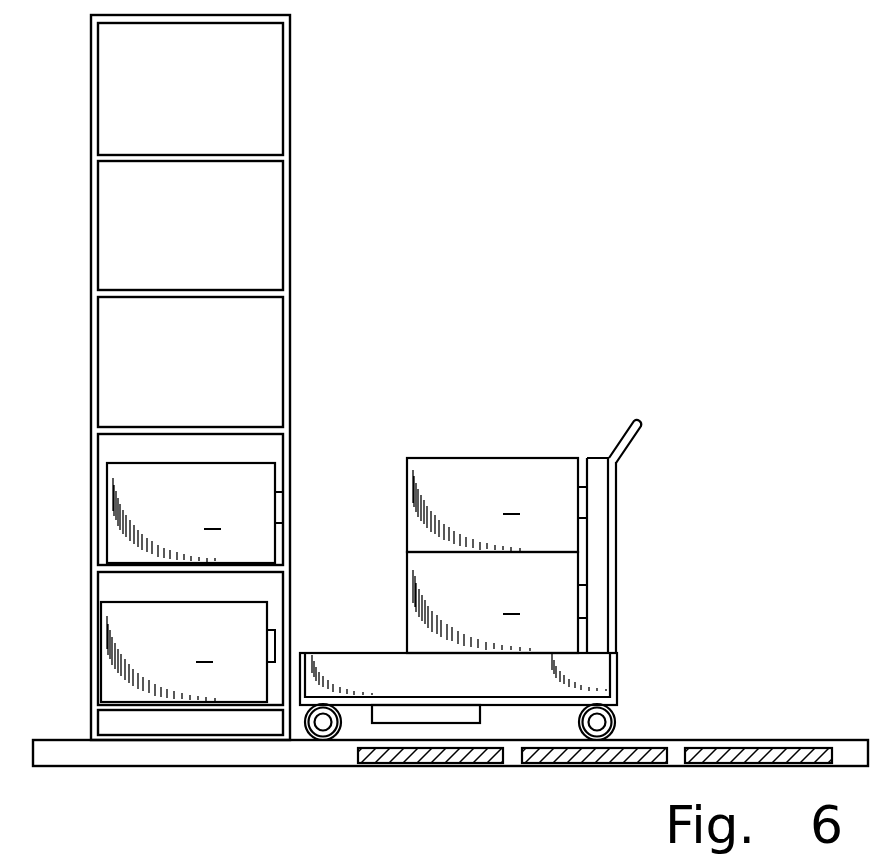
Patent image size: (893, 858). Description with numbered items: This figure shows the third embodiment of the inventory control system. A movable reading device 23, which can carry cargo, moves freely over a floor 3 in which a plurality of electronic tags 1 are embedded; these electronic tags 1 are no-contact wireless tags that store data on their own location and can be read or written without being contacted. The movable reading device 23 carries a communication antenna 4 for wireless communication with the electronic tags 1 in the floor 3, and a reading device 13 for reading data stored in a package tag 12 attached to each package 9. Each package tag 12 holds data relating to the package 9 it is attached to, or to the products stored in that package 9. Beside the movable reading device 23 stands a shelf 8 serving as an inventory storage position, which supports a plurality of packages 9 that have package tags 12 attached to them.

The electronic tag 1 is at (745, 747).
The floor 3 is at (848, 738).
The communication antenna 4 is at (402, 715).
The shelf 8 is at (291, 37).
The package 9 is at (339, 580).
The package tag 12 is at (284, 505).
The reading device 13 is at (595, 556).
The movable reading device 23 is at (627, 438).